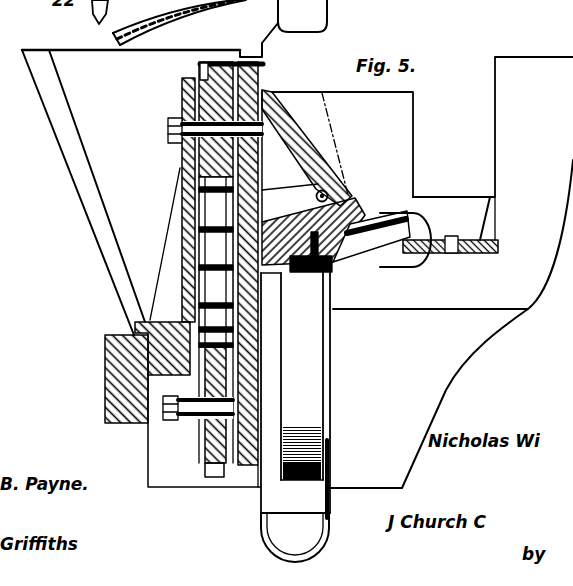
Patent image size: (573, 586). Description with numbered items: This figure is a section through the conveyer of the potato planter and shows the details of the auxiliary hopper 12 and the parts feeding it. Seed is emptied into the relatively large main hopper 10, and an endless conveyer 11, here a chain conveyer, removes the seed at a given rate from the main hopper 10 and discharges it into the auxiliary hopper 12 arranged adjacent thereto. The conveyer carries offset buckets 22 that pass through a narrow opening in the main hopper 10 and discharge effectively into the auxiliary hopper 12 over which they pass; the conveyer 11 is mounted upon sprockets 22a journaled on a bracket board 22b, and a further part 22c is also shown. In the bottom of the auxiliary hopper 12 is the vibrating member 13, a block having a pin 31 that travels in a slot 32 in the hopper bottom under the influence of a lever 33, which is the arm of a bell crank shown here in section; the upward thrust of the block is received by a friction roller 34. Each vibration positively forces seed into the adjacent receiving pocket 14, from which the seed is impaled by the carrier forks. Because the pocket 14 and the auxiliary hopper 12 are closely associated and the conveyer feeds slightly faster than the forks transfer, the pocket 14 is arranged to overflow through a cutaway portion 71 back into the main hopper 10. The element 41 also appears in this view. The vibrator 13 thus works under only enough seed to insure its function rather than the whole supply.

The main hopper 10 is at (150, 179).
The endless conveyer 11 is at (182, 246).
The auxiliary hopper 12 is at (342, 144).
The vibrating member 13 is at (348, 204).
The receiving pocket 14 is at (498, 188).
The buckets 22 is at (302, 16).
The sprockets 22a is at (203, 447).
The bracket board 22b is at (182, 168).
The bracket 22c is at (210, 70).
The pin 31 is at (333, 264).
The slot 32 is at (366, 229).
The lever 33 is at (312, 262).
The friction roller 34 is at (302, 201).
The cylinder 41 is at (295, 417).
The cutaway portion 71 is at (493, 127).